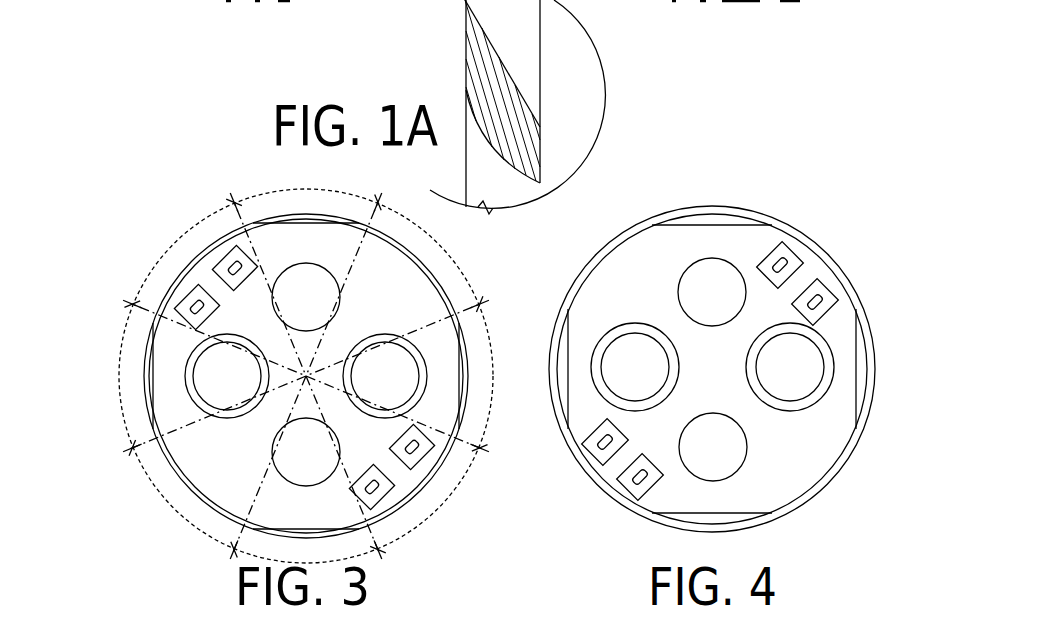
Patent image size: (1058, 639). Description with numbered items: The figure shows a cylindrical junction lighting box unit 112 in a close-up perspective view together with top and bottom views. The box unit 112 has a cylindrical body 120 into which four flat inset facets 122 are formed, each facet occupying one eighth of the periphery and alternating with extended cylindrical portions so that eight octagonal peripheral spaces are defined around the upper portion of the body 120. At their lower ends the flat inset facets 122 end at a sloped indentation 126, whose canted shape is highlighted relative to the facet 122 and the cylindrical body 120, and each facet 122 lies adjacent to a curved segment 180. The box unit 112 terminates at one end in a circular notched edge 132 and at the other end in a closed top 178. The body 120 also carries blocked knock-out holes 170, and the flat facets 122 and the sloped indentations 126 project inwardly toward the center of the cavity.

In FIG. 3, the cylindrical junction lighting box unit 112 is at (292, 373).
In FIG. 4, the cylindrical junction lighting box unit 112 is at (714, 358).
In FIG. 1A, the cylindrical body 120 is at (552, 25).
In FIG. 3, the cylindrical body 120 is at (168, 463).
In FIG. 1A, the flat inset facets 122 is at (512, 53).
In FIG. 1A, the sloped indentation 126 is at (512, 120).
In FIG. 3, the sloped indentation 126 is at (143, 372).
In FIG. 4, the sloped indentation 126 is at (555, 370).
In FIG. 4, the circular notched edge 132 is at (848, 462).
In FIG. 3, the blocked knock-out holes 170 is at (318, 437).
In FIG. 4, the blocked knock-out holes 170 is at (700, 440).
In FIG. 3, the closed top 178 is at (380, 287).
In FIG. 4, the closed top 178 is at (625, 272).
In FIG. 1A, the curved segment 180 is at (572, 90).